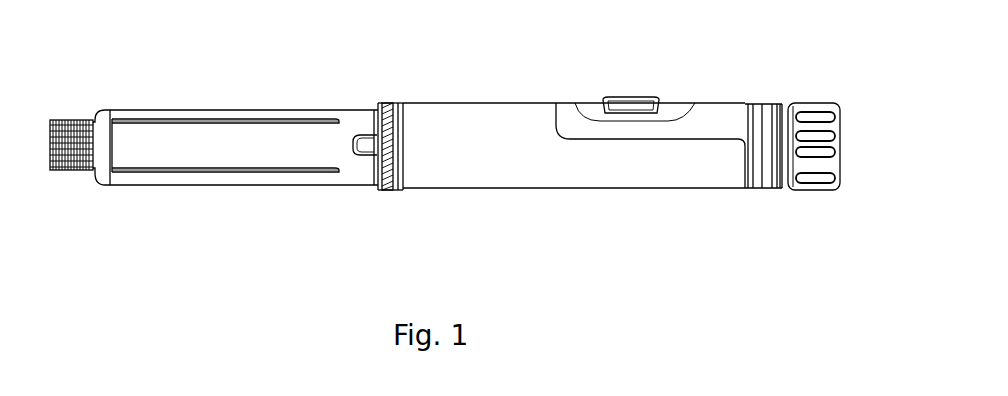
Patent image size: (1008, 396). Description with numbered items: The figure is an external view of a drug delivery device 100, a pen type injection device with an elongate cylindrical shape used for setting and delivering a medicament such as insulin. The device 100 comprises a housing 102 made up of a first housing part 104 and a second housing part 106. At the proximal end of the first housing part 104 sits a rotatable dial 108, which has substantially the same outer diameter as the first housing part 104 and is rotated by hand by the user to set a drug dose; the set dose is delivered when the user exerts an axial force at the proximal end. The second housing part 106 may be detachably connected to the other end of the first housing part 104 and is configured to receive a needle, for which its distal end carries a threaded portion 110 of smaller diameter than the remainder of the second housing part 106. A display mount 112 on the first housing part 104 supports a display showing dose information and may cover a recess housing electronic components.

The drug delivery device 100 is at (626, 298).
The housing 102 is at (395, 105).
The first housing part 104 is at (711, 132).
The second housing part 106 is at (263, 175).
The rotatable dial 108 is at (810, 187).
The threaded portion 110 is at (77, 170).
The display mount 112 is at (630, 105).